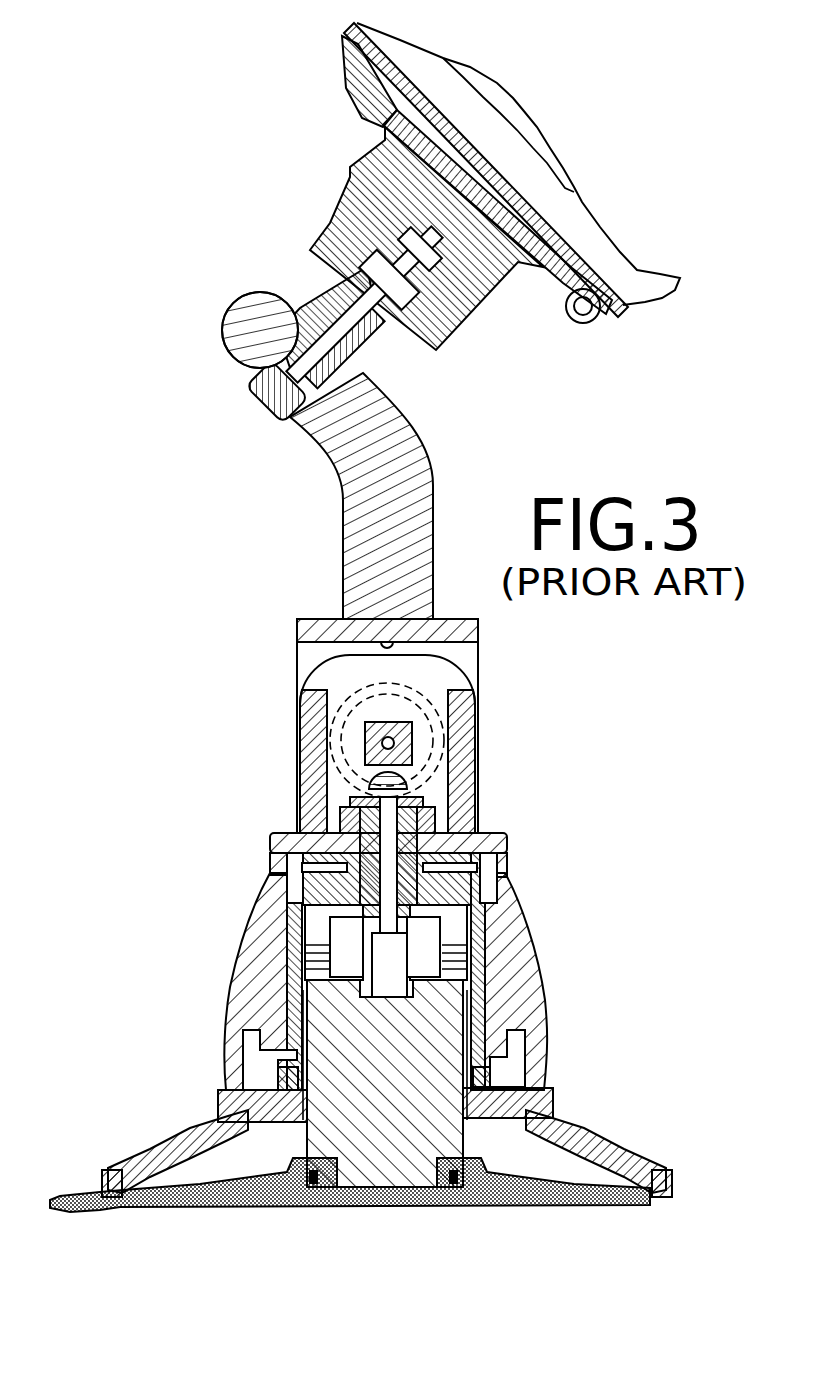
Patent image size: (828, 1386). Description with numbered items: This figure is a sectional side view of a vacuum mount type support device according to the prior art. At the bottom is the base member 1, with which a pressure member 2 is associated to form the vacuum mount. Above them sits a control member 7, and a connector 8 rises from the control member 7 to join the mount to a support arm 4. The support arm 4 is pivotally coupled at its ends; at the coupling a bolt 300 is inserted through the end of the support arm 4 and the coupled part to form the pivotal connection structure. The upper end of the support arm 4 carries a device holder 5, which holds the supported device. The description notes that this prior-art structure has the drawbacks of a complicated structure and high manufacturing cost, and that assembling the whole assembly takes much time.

The base member 1 is at (183, 1202).
The pressure member 2 is at (195, 1128).
The support arm 4 is at (350, 443).
The device holder 5 is at (565, 212).
The control member 7 is at (253, 930).
The connector 8 is at (460, 786).
The bolt 300 is at (363, 740).